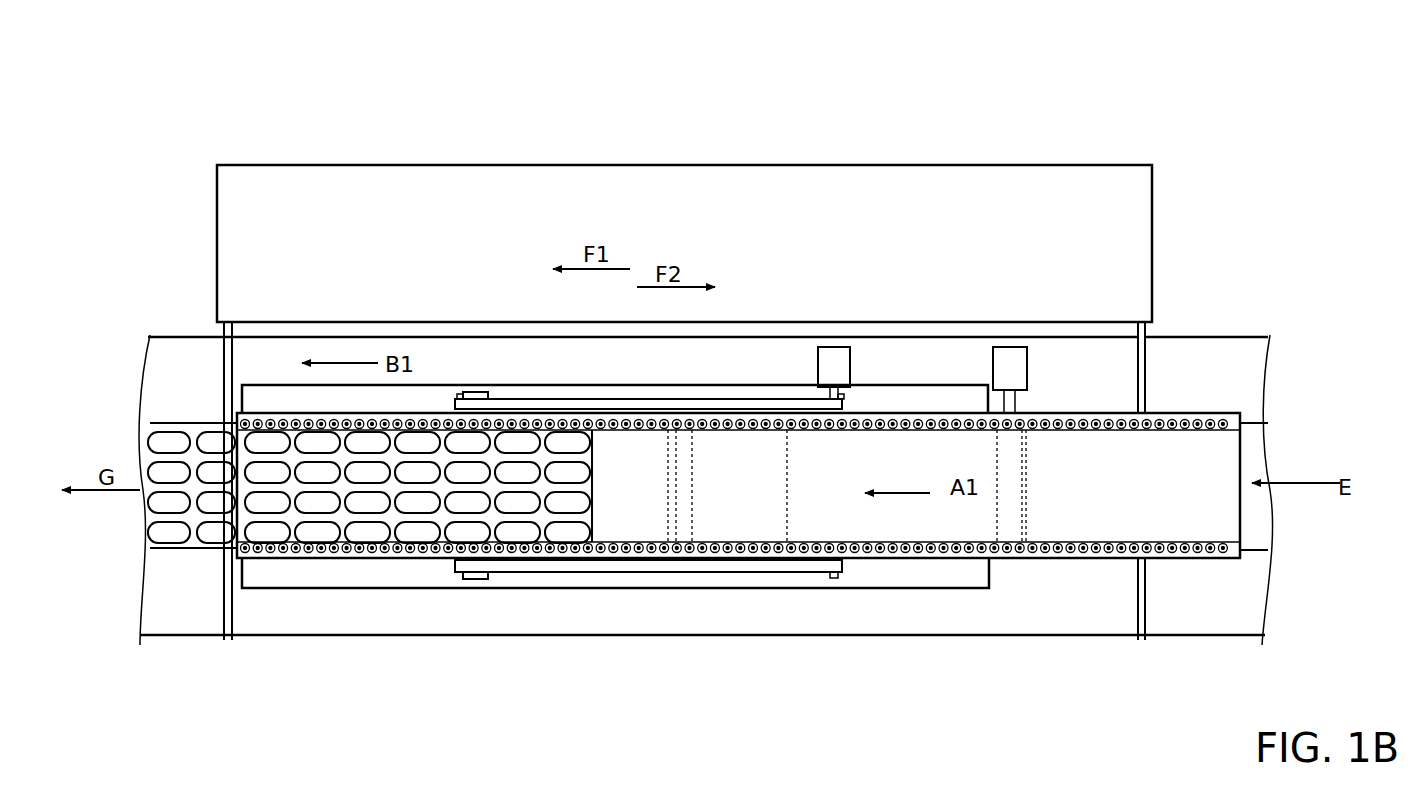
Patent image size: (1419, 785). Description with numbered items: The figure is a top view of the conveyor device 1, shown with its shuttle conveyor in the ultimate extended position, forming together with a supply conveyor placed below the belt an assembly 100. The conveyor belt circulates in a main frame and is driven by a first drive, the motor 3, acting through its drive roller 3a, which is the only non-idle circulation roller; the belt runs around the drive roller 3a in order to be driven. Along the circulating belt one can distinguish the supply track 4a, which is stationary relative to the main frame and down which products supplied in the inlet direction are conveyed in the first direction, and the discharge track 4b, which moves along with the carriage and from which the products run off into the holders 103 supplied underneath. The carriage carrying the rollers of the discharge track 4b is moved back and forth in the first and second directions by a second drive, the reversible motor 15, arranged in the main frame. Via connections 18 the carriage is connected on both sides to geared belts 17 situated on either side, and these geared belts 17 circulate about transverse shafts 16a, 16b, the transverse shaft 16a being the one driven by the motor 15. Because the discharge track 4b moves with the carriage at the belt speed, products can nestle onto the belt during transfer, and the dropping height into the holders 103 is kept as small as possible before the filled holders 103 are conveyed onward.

The conveyor device 1 is at (197, 115).
The assembly 100 is at (1120, 128).
The holders 103 is at (158, 527).
The supply track 4a is at (750, 532).
The discharge track 4b is at (390, 556).
The motor 3 is at (1008, 350).
The drive roller 3a is at (1013, 491).
The motor 15 is at (836, 355).
The transverse shaft 16a is at (841, 397).
The transverse shaft 16b is at (463, 396).
The geared belts 17 is at (613, 407).
The connections 18 is at (482, 393).